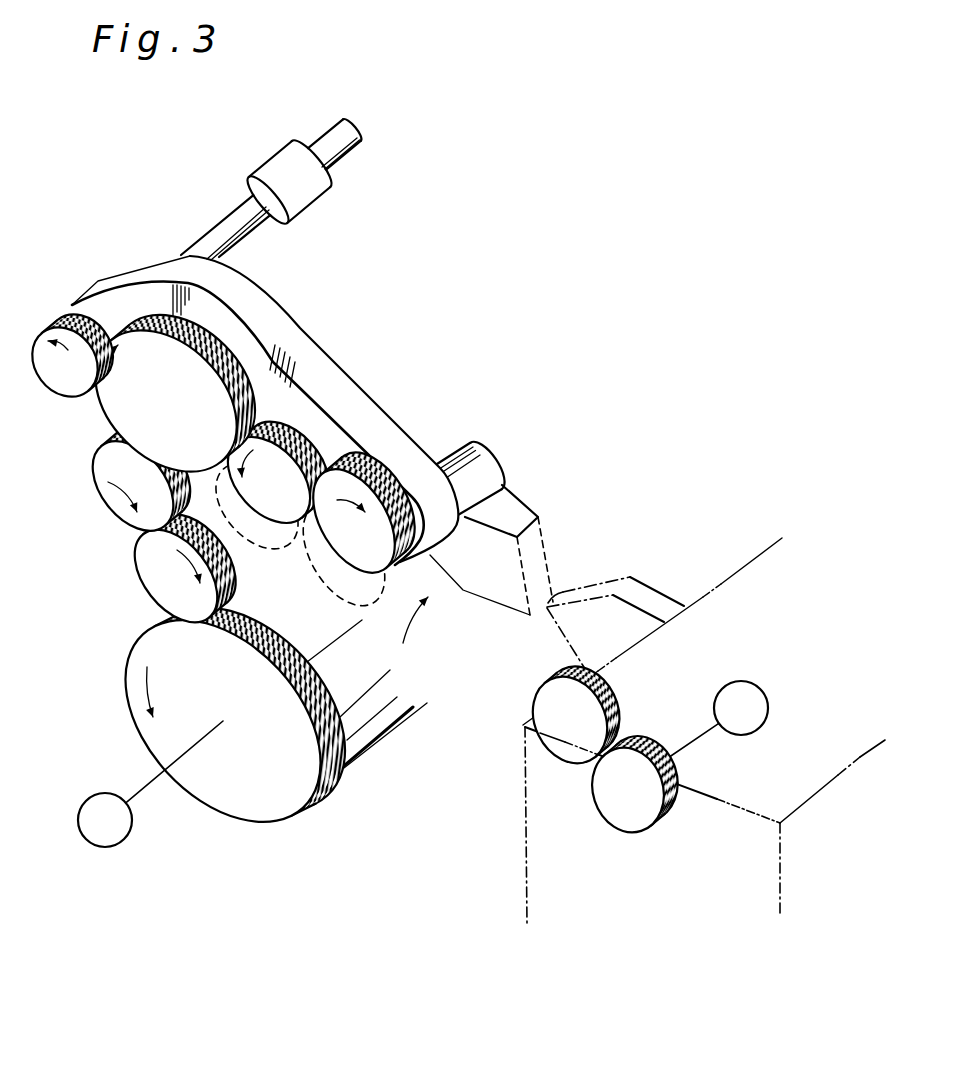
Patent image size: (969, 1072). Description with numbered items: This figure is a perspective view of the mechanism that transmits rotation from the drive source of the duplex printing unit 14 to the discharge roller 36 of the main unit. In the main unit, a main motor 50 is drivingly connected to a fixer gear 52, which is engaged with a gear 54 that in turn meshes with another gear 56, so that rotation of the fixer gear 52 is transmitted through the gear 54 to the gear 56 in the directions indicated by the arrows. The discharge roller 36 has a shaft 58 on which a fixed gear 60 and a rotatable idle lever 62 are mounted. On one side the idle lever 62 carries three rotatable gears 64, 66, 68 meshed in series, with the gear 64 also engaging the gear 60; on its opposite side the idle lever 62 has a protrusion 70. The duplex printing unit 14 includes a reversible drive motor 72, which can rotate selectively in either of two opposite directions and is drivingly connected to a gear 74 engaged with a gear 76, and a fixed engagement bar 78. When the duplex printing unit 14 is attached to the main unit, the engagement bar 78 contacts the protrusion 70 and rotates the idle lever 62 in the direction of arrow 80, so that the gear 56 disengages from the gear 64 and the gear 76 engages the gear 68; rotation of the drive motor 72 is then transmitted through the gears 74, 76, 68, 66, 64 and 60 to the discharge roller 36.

The duplex printing unit 14 is at (753, 813).
The discharge roller 36 is at (277, 167).
The main motor 50 is at (150, 800).
The fixer gear 52 is at (303, 813).
The gear 54 is at (138, 567).
The gear 56 is at (98, 496).
The shaft 58 is at (358, 128).
The fixed gear 60 is at (62, 313).
The idle lever 62 is at (293, 323).
The gear 64 is at (133, 407).
The gear 66 is at (322, 458).
The gear 68 is at (407, 467).
The protrusion 70 is at (497, 457).
The reversible drive motor 72 is at (763, 688).
The gear 74 is at (632, 832).
The gear 76 is at (532, 695).
The engagement bar 78 is at (530, 507).
The arrow 80 is at (425, 618).